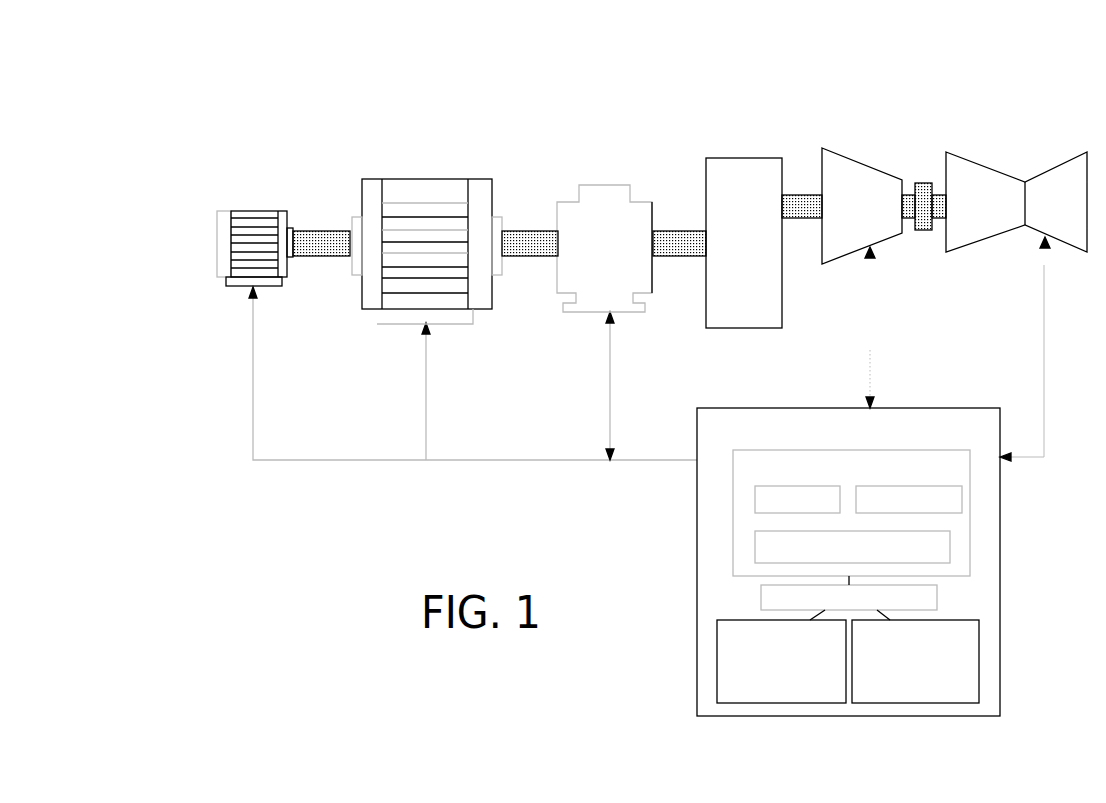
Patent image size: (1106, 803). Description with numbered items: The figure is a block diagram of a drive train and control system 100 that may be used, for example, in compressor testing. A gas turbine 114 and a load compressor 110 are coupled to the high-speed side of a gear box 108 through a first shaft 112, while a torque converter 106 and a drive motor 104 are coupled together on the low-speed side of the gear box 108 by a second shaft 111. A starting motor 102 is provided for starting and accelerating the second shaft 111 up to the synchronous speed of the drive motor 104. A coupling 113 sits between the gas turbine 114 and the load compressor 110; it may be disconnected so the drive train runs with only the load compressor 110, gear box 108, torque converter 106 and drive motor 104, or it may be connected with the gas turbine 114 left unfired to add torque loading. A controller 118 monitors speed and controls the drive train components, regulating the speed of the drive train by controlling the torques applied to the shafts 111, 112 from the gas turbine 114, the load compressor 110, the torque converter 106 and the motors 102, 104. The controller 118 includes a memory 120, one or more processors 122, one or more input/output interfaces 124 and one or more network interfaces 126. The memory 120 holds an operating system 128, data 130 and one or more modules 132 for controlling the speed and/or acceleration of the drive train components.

The drive train and control system 100 is at (685, 86).
The starting motor 102 is at (241, 210).
The drive motor 104 is at (403, 178).
The torque converter 106 is at (598, 182).
The gear box 108 is at (718, 158).
The load compressor 110 is at (843, 155).
The second shaft 111 is at (332, 255).
The first shaft 112 is at (793, 220).
The coupling 113 is at (923, 233).
The gas turbine 114 is at (1000, 170).
The controller 118 is at (913, 438).
The memory 120 is at (908, 478).
The processors 122 is at (929, 606).
The input/output interfaces 124 is at (798, 696).
The network interfaces 126 is at (932, 696).
The operating system 128 is at (833, 510).
The data 130 is at (952, 510).
The modules 132 is at (938, 556).